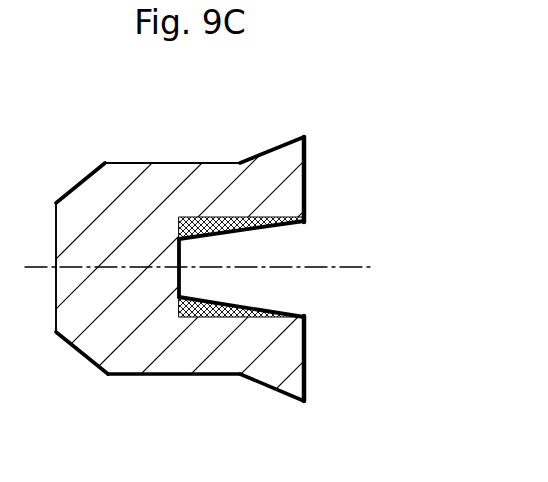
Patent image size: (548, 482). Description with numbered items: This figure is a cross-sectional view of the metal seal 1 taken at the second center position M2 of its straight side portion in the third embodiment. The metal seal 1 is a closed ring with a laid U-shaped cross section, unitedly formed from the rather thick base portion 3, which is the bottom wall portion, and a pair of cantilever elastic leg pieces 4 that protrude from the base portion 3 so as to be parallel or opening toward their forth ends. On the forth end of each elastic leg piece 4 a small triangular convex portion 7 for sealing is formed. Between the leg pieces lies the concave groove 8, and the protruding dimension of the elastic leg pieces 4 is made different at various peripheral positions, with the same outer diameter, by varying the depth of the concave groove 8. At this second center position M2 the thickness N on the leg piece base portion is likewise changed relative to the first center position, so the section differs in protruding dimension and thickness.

The metal seal 1 is at (184, 156).
The base portion 3 is at (83, 230).
The elastic leg piece 4 is at (247, 185).
The small convex portion 7 is at (287, 143).
The concave groove 8 is at (232, 280).
The thickness on leg piece base portion N is at (197, 218).
The second center position M2 is at (110, 385).